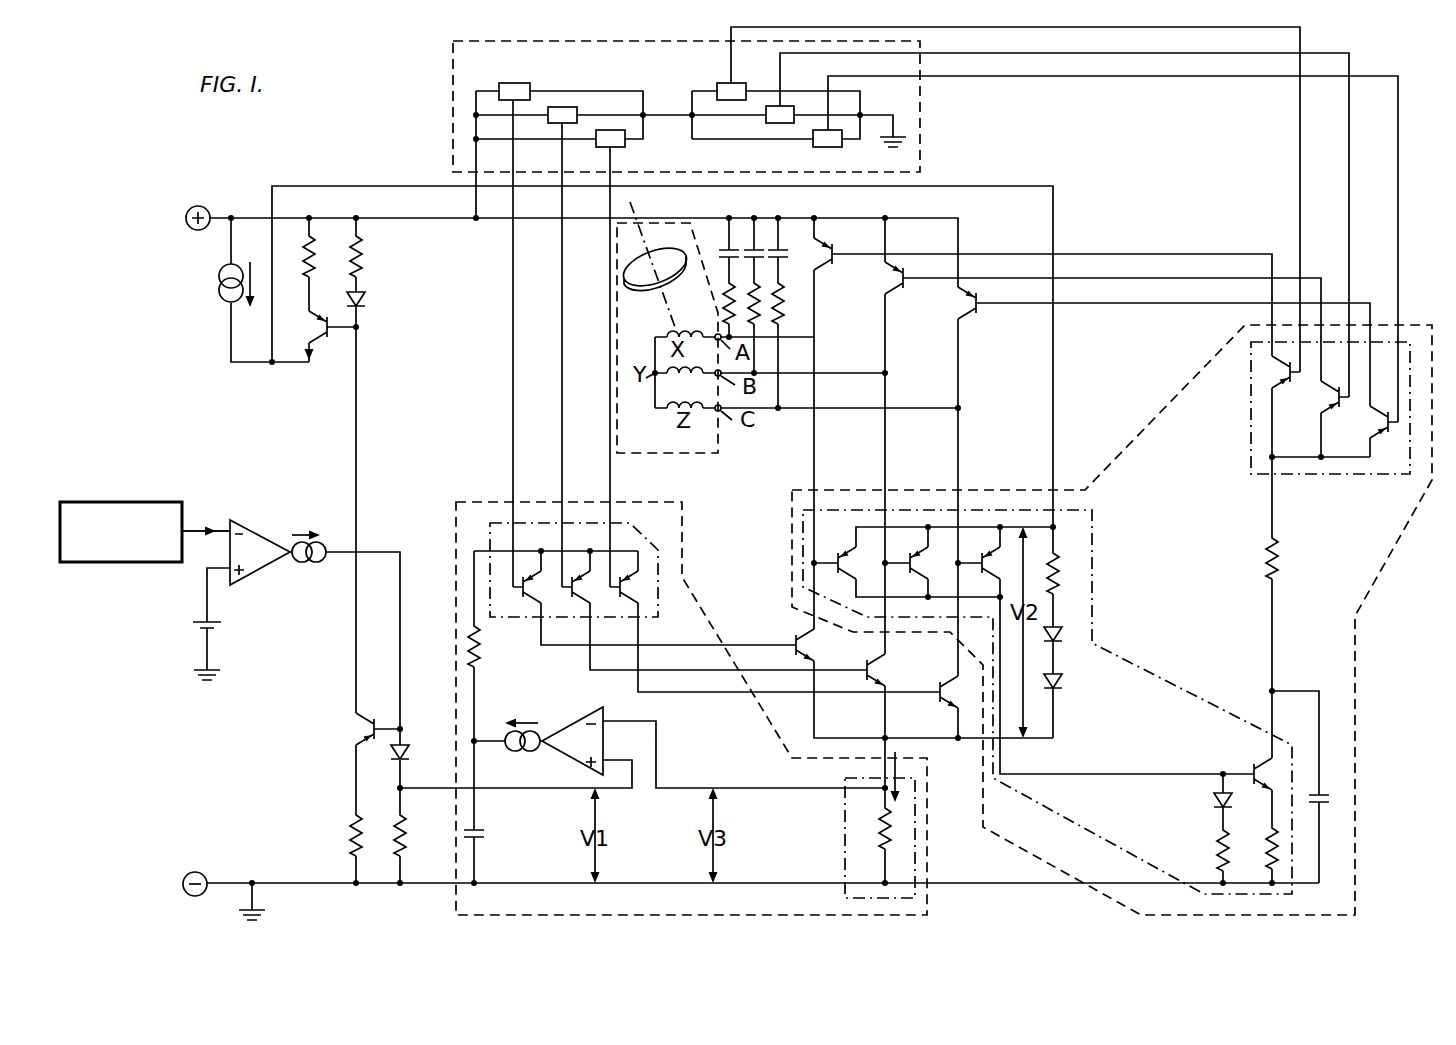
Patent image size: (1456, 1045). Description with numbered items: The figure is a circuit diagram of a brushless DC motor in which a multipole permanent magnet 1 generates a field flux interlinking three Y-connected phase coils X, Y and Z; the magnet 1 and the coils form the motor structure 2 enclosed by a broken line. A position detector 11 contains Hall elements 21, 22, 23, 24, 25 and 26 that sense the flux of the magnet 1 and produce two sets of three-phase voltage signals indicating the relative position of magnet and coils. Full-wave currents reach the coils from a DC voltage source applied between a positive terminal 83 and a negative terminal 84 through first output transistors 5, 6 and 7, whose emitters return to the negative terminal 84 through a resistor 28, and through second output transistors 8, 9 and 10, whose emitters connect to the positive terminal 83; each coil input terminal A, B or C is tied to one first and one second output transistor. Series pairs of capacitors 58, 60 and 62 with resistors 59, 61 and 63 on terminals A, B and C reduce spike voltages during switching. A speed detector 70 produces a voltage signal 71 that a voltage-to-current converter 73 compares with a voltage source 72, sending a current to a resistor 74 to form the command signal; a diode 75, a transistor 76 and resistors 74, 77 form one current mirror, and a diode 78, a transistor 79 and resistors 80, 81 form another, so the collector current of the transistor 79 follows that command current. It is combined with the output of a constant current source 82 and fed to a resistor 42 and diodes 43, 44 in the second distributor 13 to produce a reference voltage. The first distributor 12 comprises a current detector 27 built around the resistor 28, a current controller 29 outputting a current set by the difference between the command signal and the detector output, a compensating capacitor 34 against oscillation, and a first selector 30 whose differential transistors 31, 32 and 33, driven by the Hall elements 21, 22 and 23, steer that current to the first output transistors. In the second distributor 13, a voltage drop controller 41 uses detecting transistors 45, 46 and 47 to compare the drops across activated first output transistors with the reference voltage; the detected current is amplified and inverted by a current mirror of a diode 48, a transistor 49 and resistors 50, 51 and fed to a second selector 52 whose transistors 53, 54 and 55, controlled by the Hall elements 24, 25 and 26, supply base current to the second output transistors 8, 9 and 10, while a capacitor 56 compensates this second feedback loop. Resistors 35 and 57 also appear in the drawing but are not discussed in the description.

The magnet 1 is at (644, 287).
The motor structure 2 is at (697, 455).
The first output transistor 5 is at (797, 630).
The first output transistor 6 is at (870, 660).
The first output transistor 7 is at (942, 680).
The second output transistor 8 is at (836, 264).
The second output transistor 9 is at (906, 288).
The second output transistor 10 is at (978, 314).
The position detector 11 is at (925, 150).
The first distributor 12 is at (680, 916).
The second distributor 13 is at (1355, 775).
The Hall element 21 is at (513, 83).
The Hall element 22 is at (562, 107).
The Hall element 23 is at (610, 130).
The Hall element 24 is at (717, 83).
The Hall element 25 is at (766, 115).
The Hall element 26 is at (813, 147).
The current detector 27 is at (845, 855).
The resistor 28 is at (878, 845).
The current controller 29 is at (567, 722).
The first selector 30 is at (531, 620).
The transistor 31 is at (536, 597).
The transistor 32 is at (585, 597).
The transistor 33 is at (633, 597).
The capacitor 34 is at (482, 838).
The resistor 35 is at (488, 662).
The voltage drop controller 41 is at (1092, 592).
The resistor 42 is at (1060, 566).
The diode 43 is at (1062, 640).
The diode 44 is at (1062, 684).
The detecting transistor 45 is at (851, 578).
The detecting transistor 46 is at (923, 578).
The detecting transistor 47 is at (995, 578).
The diode 48 is at (1213, 802).
The transistor 49 is at (1251, 765).
The resistor 50 is at (1216, 854).
The resistor 51 is at (1266, 849).
The second selector 52 is at (1251, 428).
The transistor 53 is at (1283, 386).
The transistor 54 is at (1334, 410).
The transistor 55 is at (1383, 435).
The capacitor 56 is at (1325, 798).
The resistor 57 is at (1280, 572).
The capacitor 58 is at (728, 250).
The resistor 59 is at (722, 305).
The capacitor 60 is at (757, 248).
The resistor 61 is at (772, 325).
The capacitor 62 is at (779, 255).
The resistor 63 is at (780, 292).
The speed detector 70 is at (136, 501).
The voltage signal 71 is at (188, 532).
The voltage source 72 is at (195, 622).
The voltage-to-current converter 73 is at (256, 526).
The resistor 74 is at (408, 843).
The diode 75 is at (410, 755).
The transistor 76 is at (369, 718).
The resistor 77 is at (348, 836).
The diode 78 is at (368, 300).
The transistor 79 is at (319, 342).
The resistor 80 is at (364, 264).
The resistor 81 is at (312, 265).
The constant current source 82 is at (218, 283).
The terminal 83 is at (190, 228).
The terminal 84 is at (196, 873).